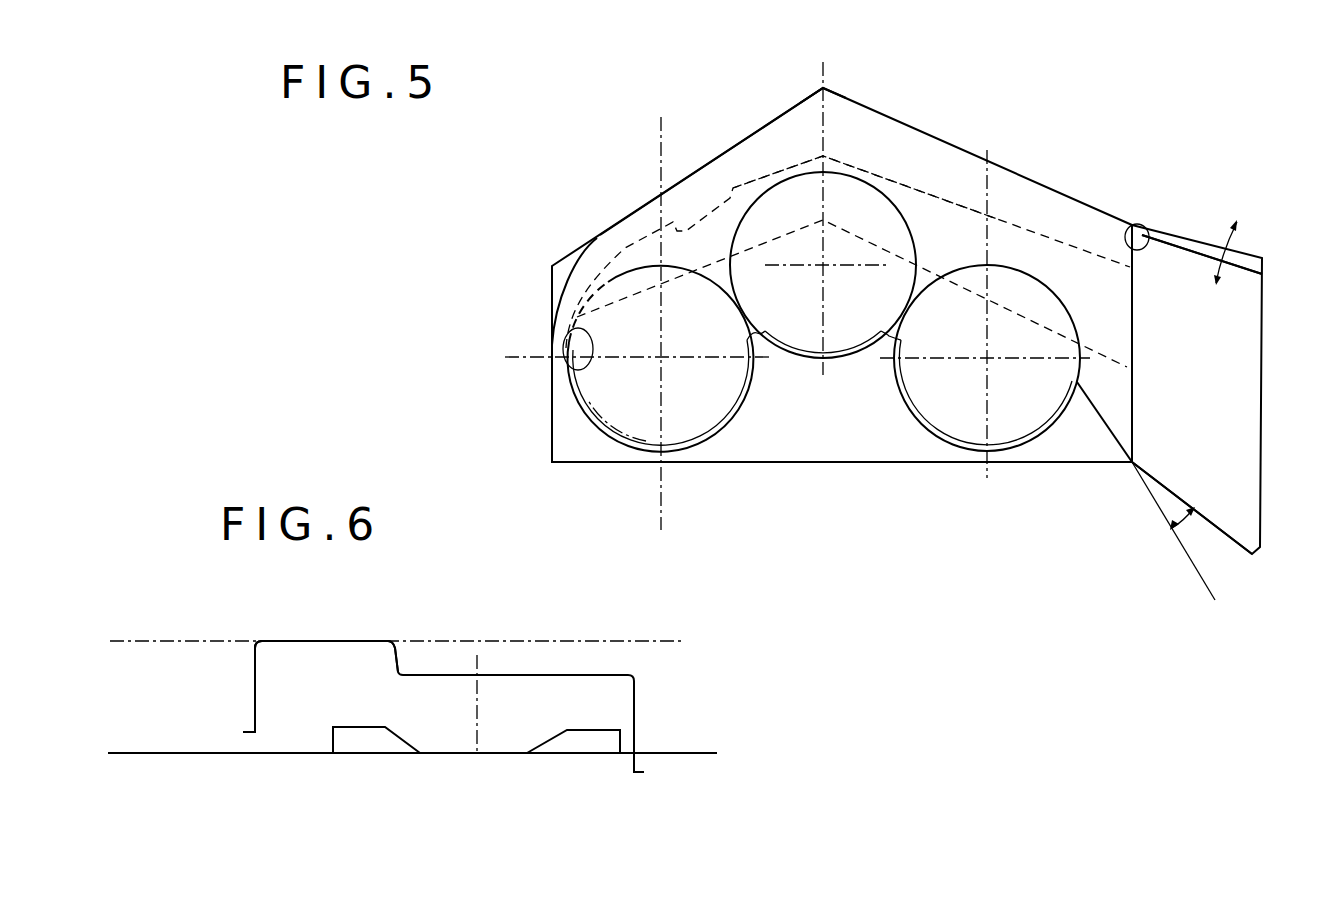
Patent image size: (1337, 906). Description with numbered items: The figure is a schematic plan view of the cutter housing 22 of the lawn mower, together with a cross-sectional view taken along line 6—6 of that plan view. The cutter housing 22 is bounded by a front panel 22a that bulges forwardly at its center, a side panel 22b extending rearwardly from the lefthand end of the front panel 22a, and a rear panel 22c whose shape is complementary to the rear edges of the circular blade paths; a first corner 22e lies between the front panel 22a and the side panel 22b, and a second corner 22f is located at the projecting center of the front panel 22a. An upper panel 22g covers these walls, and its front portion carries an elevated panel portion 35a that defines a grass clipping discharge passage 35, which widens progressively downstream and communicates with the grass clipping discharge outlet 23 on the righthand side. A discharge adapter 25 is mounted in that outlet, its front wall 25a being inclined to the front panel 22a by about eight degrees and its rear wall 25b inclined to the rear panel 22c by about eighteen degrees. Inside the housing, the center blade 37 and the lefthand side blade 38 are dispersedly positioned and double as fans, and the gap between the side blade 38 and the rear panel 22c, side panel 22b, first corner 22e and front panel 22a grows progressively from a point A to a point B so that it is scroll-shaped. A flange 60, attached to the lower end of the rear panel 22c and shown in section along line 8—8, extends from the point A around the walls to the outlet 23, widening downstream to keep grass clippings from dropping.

In FIG. 5, the cutter housing 22 is at (983, 92).
In FIG. 6, the cutter housing 22 is at (505, 662).
In FIG. 5, the front panel 22a is at (745, 160).
In FIG. 5, the side panel 22b is at (553, 410).
In FIG. 5, the rear panel 22c is at (833, 362).
In FIG. 5, the first corner 22e is at (553, 300).
In FIG. 5, the second corner 22f is at (810, 88).
In FIG. 6, the upper panel 22g is at (570, 662).
In FIG. 5, the grass clipping discharge outlet 23 is at (1152, 228).
In FIG. 5, the discharge adapter 25 is at (1173, 232).
In FIG. 5, the front wall 25a is at (1210, 240).
In FIG. 5, the rear wall 25b is at (1163, 486).
In FIG. 5, the grass clipping discharge passage 35 is at (790, 170).
In FIG. 6, the grass clipping discharge passage 35 is at (320, 690).
In FIG. 5, the elevated panel portion 35a is at (957, 223).
In FIG. 6, the elevated panel portion 35a is at (328, 641).
In FIG. 5, the center blade 37 is at (870, 347).
In FIG. 5, the lefthand side blade 38 is at (733, 418).
In FIG. 6, the lefthand side blade 38 is at (383, 753).
In FIG. 5, the flange 60 is at (560, 355).
In FIG. 5, the section line 6— 6 is at (661, 117).
In FIG. 5, the section line 8— 8 is at (639, 427).
In FIG. 5, the point A is at (661, 461).
In FIG. 5, the point B is at (658, 197).